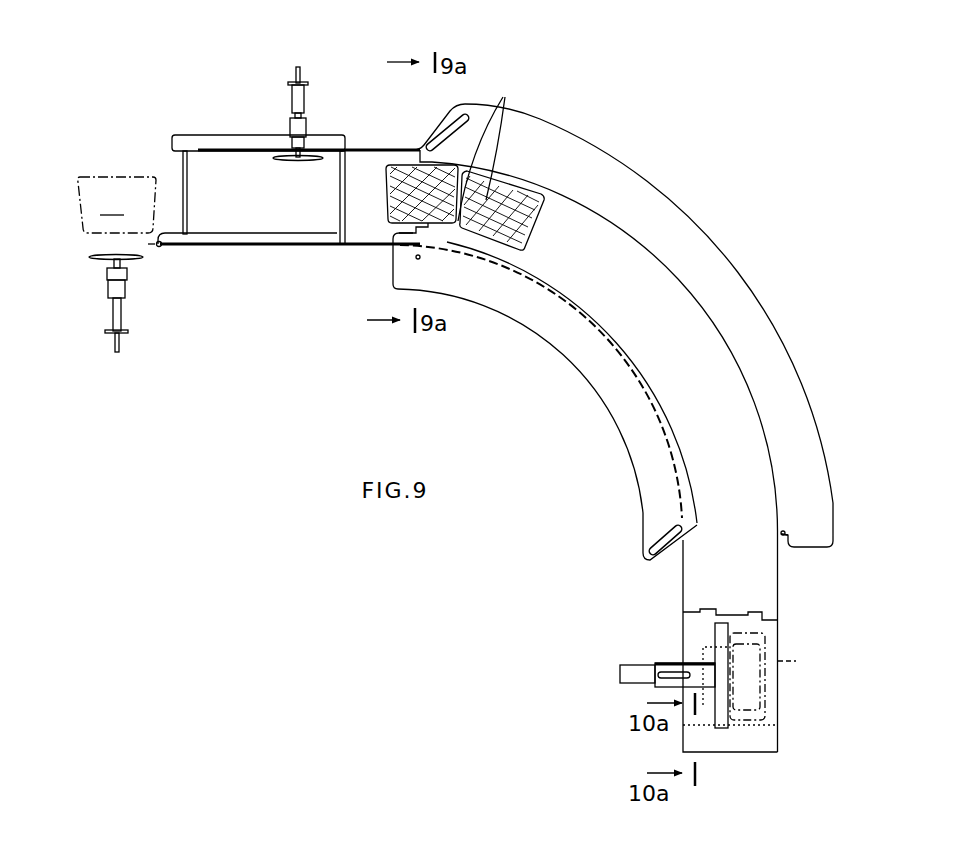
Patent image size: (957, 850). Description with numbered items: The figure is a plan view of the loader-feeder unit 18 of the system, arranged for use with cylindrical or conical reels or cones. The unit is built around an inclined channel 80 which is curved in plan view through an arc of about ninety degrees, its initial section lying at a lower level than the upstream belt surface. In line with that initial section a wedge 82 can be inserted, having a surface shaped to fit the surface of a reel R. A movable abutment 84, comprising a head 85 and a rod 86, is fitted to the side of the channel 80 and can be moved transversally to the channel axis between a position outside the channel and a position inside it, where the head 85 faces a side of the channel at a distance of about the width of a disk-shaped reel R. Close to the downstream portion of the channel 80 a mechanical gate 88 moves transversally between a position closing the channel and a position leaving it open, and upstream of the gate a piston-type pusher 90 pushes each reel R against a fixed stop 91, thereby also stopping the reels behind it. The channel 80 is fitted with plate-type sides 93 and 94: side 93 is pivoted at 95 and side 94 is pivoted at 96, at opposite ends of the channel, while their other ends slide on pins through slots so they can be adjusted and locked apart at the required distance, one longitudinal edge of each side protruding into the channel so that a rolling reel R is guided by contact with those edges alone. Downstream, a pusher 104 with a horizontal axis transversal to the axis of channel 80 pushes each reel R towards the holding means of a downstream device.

The loader-feeder unit 18 is at (592, 386).
The inclined channel 80 is at (670, 334).
The wedge 82 is at (740, 745).
The movable abutment 84 is at (640, 651).
The head 85 is at (719, 634).
The rod 86 is at (658, 683).
The mechanical gate 88 is at (188, 190).
The piston-type pusher 90 is at (284, 126).
The fixed stop 91 is at (317, 233).
The plate-type side 93 is at (657, 215).
The plate-type side 94 is at (555, 327).
The pivot 95 is at (784, 537).
The pivot 96 is at (416, 259).
The pusher 104 is at (131, 272).
The reel R is at (444, 395).